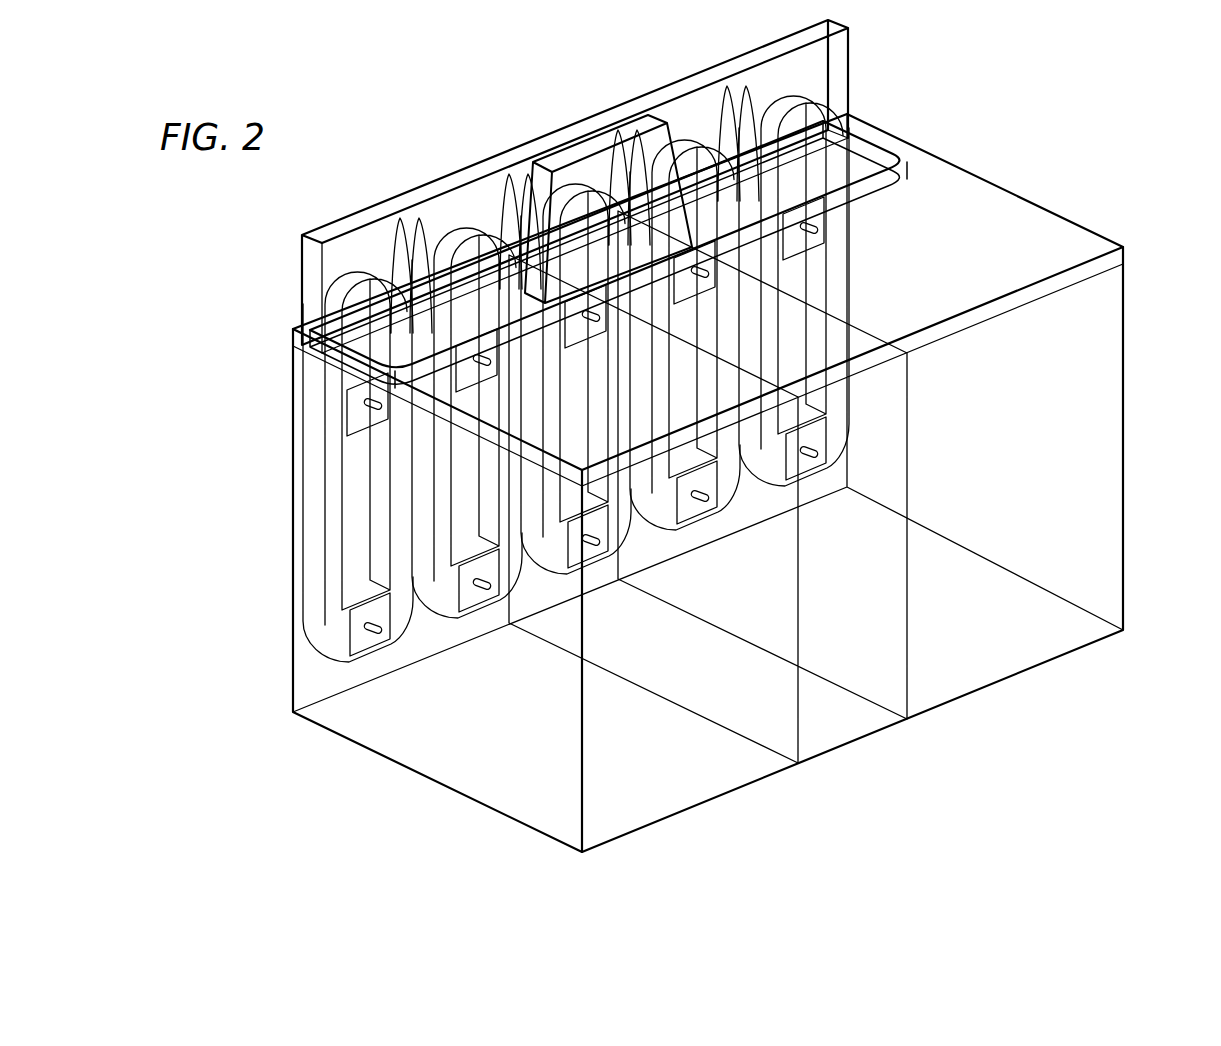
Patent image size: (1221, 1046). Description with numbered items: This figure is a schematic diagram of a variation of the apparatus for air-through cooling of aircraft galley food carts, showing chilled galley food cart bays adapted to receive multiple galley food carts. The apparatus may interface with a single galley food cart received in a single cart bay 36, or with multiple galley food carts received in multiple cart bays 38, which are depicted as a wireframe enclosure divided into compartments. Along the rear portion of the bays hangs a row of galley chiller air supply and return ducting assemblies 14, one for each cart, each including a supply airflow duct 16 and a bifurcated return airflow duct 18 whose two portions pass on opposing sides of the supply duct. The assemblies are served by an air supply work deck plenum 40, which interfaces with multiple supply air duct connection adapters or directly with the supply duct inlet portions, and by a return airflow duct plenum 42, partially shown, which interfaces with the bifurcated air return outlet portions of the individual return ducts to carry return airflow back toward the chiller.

The galley chiller air supply and return ducting assembly 14 is at (316, 658).
The supply airflow duct 16 is at (348, 384).
The bifurcated return airflow duct 18 is at (310, 569).
The single cart bay 36 is at (843, 717).
The multiple cart bays 38 is at (438, 747).
The air supply work deck plenum 40 is at (598, 140).
The return airflow duct plenum 42 is at (571, 130).